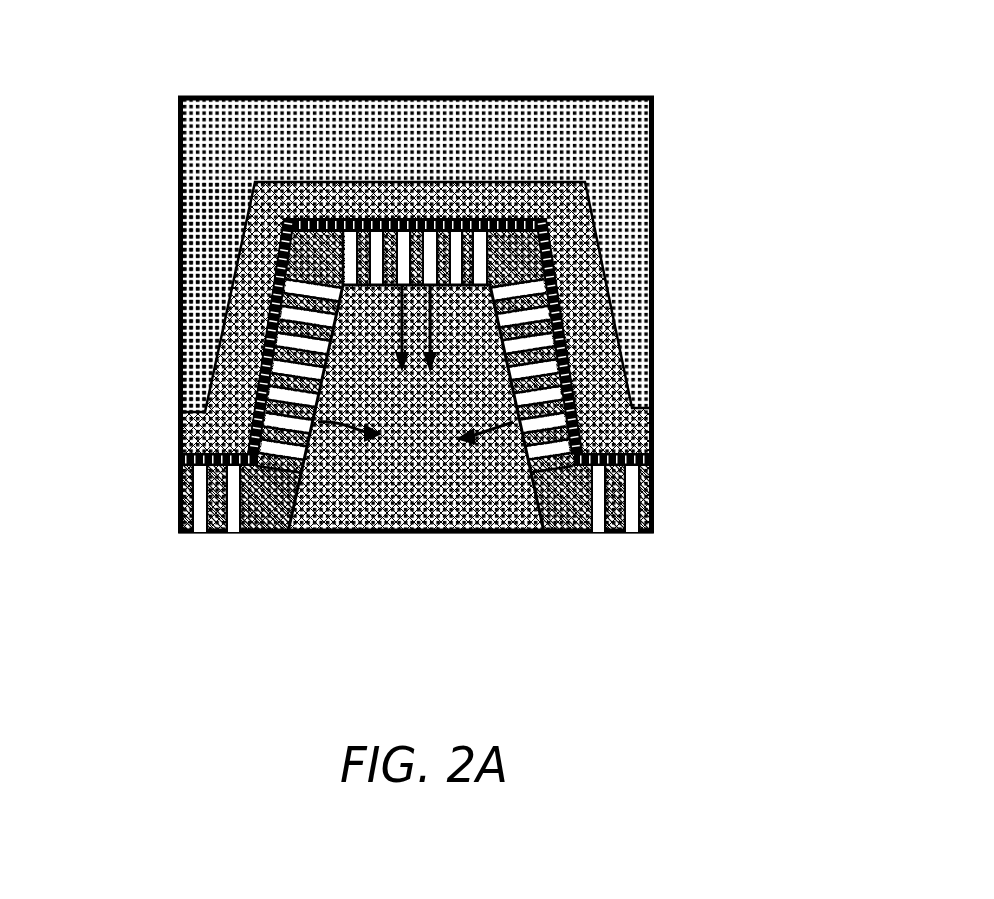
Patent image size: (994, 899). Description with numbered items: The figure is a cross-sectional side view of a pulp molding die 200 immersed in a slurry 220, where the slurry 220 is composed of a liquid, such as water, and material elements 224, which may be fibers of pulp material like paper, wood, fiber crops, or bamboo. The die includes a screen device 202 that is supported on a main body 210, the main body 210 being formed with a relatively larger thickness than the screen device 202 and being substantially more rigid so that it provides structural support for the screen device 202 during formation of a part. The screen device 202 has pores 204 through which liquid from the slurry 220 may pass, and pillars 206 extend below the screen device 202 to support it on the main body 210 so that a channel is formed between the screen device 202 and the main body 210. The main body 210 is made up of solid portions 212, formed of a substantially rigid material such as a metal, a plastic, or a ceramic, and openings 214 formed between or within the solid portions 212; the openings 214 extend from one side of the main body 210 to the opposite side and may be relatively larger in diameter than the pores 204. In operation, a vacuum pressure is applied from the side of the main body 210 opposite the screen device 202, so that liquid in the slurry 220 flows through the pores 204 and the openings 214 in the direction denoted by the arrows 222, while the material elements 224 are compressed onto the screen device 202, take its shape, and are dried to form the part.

The pulp molding die 200 is at (435, 315).
The screen device 202 is at (378, 315).
The pores 204 is at (321, 218).
The pillars 206 is at (237, 433).
The main body 210 is at (567, 522).
The solid portions 212 is at (256, 525).
The openings 214 is at (421, 455).
The slurry 220 is at (200, 153).
The arrows 222 is at (360, 428).
The material elements 224 is at (223, 337).